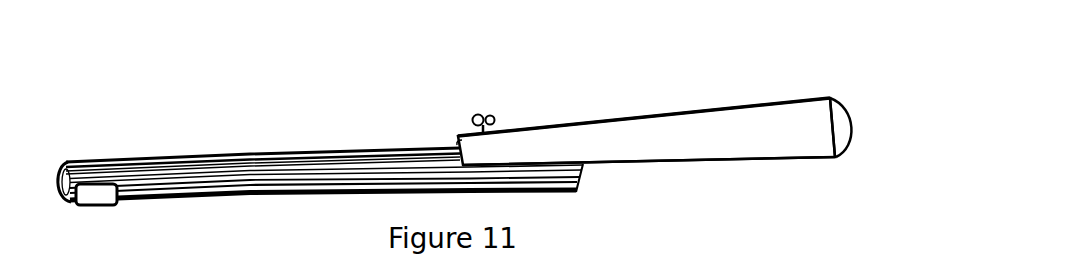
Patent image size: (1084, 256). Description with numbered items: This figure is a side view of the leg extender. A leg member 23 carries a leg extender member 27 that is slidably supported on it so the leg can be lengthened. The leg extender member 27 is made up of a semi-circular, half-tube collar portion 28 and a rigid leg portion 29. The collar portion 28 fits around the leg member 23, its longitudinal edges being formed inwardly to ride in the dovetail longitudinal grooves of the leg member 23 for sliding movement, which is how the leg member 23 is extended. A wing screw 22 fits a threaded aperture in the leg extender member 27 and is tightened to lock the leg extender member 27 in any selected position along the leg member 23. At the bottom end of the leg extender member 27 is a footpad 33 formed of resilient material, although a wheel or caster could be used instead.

The leg member 23 is at (203, 157).
The wing screw 22 is at (476, 115).
The leg extender member 27 is at (588, 152).
The rigid leg portion 29 is at (643, 116).
The collar portion 28 is at (733, 162).
The footpad 33 is at (837, 100).